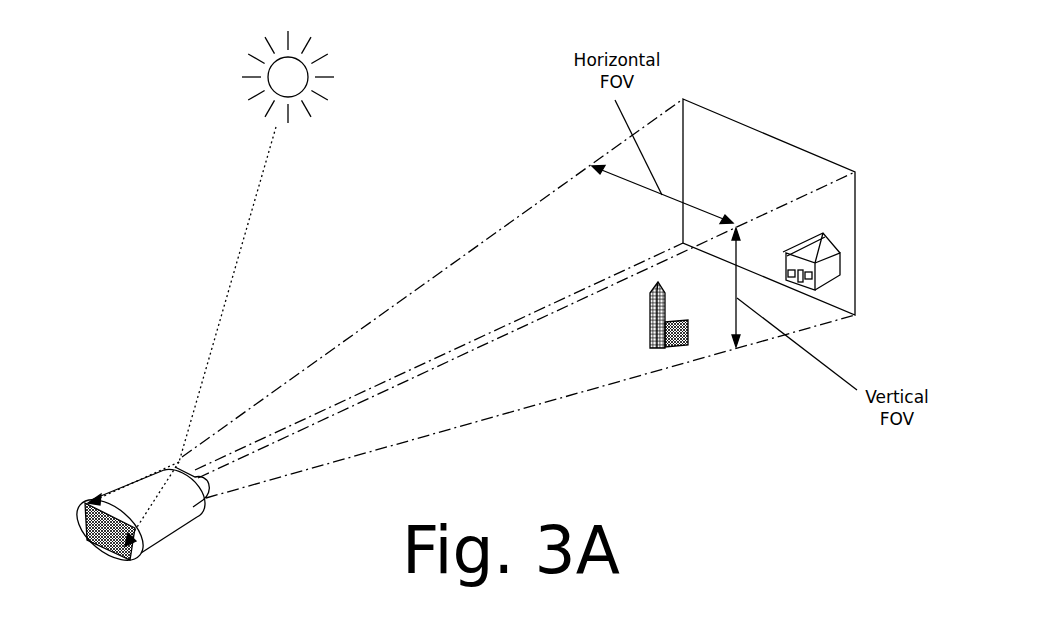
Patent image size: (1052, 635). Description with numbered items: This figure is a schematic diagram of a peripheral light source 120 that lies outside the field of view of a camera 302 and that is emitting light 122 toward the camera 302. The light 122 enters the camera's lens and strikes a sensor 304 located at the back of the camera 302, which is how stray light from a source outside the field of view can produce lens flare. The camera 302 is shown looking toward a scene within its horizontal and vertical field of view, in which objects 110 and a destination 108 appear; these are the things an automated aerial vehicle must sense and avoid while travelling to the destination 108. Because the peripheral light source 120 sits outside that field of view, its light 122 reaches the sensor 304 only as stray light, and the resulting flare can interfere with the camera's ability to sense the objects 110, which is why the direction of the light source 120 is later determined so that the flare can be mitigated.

The peripheral light source 120 is at (255, 40).
The light 122 is at (243, 243).
The camera 302 is at (162, 543).
The sensor 304 is at (107, 548).
The destination 108 is at (837, 277).
The objects 110 is at (665, 348).